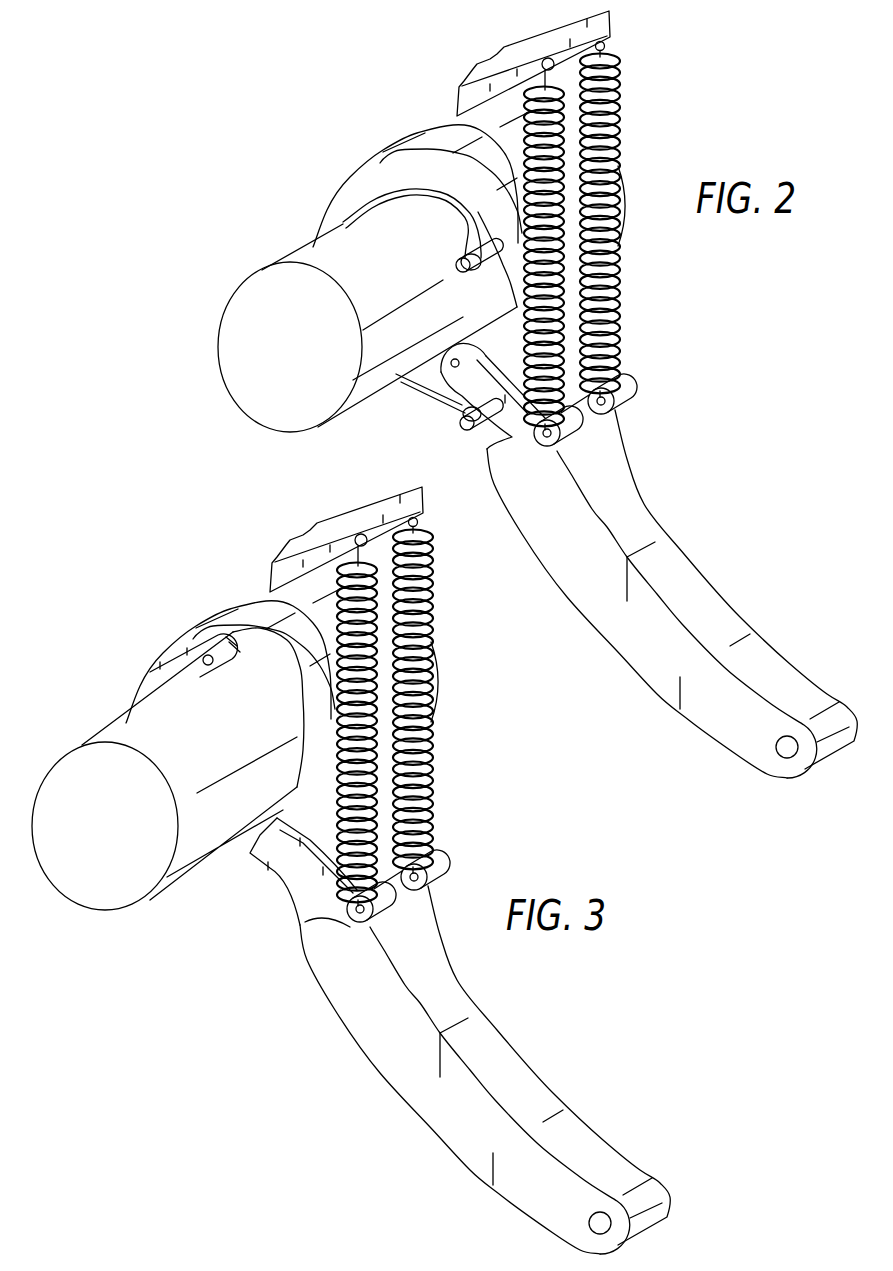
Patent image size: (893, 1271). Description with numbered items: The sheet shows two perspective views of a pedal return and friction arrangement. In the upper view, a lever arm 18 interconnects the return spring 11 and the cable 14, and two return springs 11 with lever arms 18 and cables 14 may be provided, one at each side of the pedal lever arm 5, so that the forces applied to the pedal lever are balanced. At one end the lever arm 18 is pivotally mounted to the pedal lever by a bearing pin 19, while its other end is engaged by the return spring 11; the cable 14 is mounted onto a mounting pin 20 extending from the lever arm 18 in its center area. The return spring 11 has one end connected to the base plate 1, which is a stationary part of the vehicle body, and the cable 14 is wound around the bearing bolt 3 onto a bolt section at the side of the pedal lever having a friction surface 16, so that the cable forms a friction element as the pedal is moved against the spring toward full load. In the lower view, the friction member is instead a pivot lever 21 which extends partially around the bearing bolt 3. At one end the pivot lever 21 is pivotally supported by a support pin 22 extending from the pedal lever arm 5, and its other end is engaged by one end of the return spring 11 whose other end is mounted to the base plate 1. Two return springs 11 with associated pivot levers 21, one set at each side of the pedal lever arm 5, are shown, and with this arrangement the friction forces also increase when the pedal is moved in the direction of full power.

In FIG. 2, the base plate 1 is at (470, 91).
In FIG. 3, the base plate 1 is at (287, 569).
In FIG. 2, the bearing bolt 3 is at (243, 377).
In FIG. 3, the bearing bolt 3 is at (83, 867).
In FIG. 2, the pedal lever arm 5 is at (677, 578).
In FIG. 3, the pedal lever arm 5 is at (493, 1057).
In FIG. 2, the return spring 11 is at (610, 297).
In FIG. 3, the return spring 11 is at (423, 773).
In FIG. 2, the cable 14 is at (417, 378).
In FIG. 2, the friction surface 16 is at (313, 252).
In FIG. 3, the friction surface 16 is at (128, 730).
In FIG. 2, the lever arm 18 is at (492, 470).
In FIG. 2, the bearing pin 19 is at (453, 363).
In FIG. 2, the mounting pin 20 is at (467, 428).
In FIG. 3, the pivot lever 21 is at (248, 850).
In FIG. 3, the support pin 22 is at (207, 663).